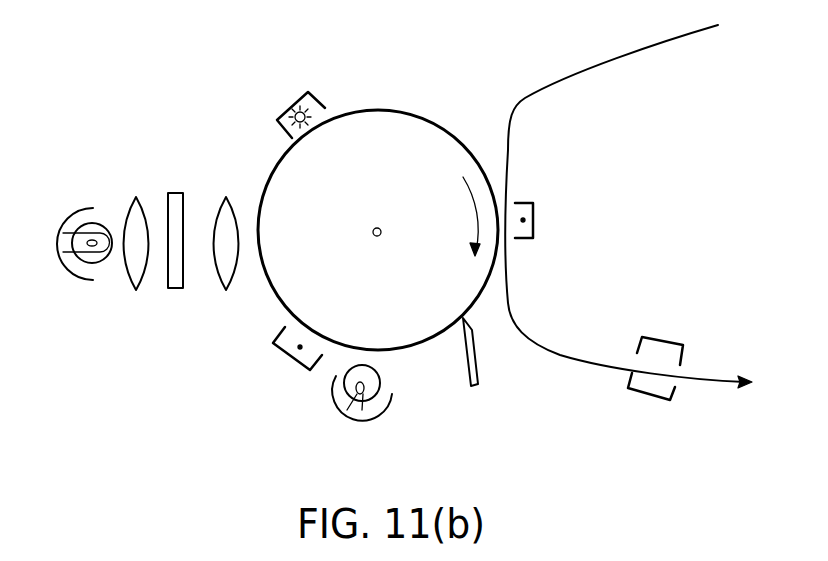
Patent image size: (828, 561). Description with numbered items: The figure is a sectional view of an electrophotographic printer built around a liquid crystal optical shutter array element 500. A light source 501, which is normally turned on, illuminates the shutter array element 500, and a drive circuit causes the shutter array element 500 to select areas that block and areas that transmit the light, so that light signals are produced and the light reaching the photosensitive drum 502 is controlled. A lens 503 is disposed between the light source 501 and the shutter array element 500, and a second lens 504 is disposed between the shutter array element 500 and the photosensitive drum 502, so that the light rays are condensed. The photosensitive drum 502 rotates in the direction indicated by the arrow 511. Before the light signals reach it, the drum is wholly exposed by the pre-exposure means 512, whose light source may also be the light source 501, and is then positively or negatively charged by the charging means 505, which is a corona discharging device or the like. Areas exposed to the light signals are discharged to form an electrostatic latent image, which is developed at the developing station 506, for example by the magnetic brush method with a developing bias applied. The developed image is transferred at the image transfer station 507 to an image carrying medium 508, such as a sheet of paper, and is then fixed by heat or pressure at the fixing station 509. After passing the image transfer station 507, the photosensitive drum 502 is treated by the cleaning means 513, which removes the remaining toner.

The shutter array element 500 is at (178, 193).
The light source 501 is at (75, 208).
The photosensitive drum 502 is at (412, 335).
The lens 503 is at (132, 198).
The lens 504 is at (230, 198).
The charging means 505 is at (287, 357).
The developing station 506 is at (318, 102).
The image transfer station 507 is at (533, 225).
The image carrying medium 508 is at (597, 65).
The fixing station 509 is at (650, 400).
The arrow 511 is at (477, 220).
The pre-exposure means 512 is at (373, 422).
The cleaning means 513 is at (475, 363).